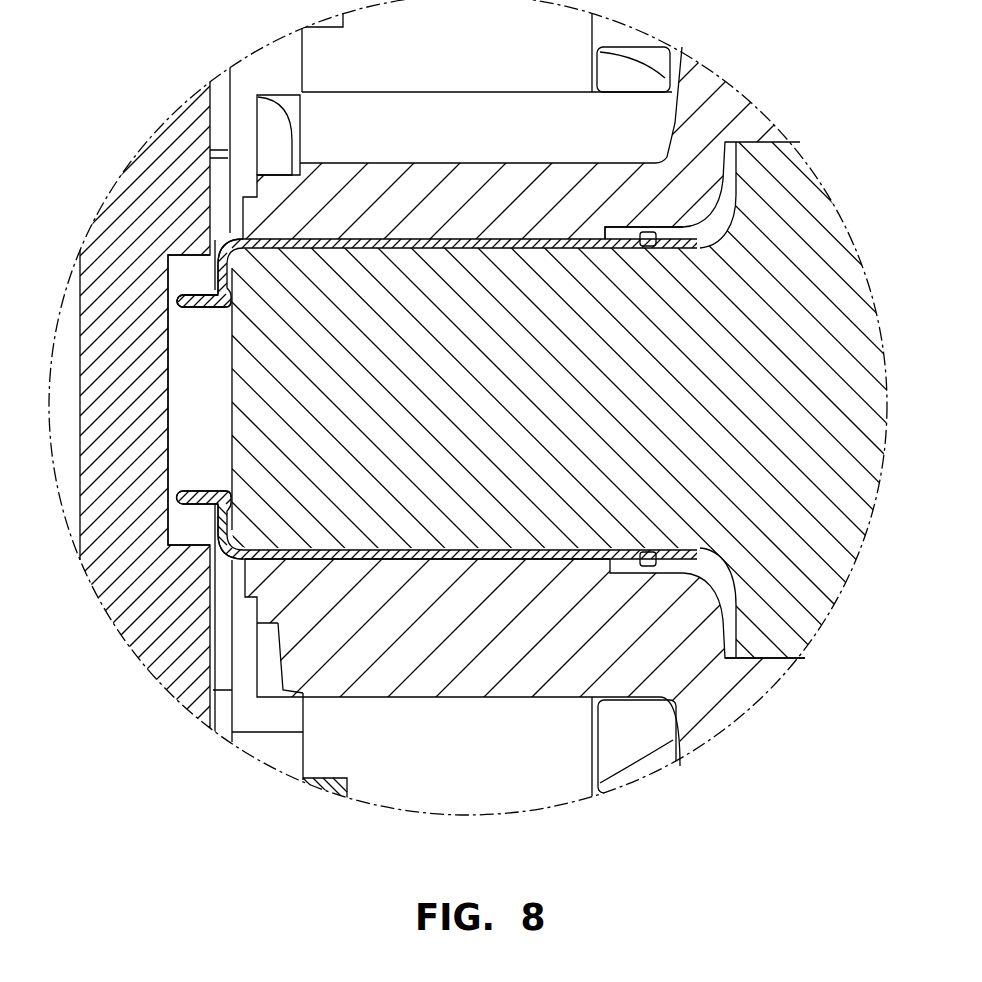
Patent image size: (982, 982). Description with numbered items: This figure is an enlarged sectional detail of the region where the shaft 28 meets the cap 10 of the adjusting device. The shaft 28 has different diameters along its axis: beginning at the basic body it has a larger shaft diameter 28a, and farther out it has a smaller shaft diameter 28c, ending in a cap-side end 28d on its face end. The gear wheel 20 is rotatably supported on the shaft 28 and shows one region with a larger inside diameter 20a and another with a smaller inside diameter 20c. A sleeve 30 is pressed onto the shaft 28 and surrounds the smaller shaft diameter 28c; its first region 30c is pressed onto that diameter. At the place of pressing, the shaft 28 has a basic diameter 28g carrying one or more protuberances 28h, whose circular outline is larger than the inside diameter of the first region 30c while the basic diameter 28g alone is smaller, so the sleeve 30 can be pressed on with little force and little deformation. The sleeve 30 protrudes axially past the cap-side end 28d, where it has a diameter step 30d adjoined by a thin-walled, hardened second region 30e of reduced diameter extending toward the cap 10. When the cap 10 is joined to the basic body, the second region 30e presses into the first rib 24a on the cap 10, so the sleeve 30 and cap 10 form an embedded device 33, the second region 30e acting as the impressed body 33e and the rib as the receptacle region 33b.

The cap 10 is at (173, 137).
The embedded device 33 is at (186, 278).
The impressed body 33e is at (185, 304).
The receptacle region 33b is at (178, 322).
The sleeve 30 is at (473, 239).
The first region 30c is at (565, 249).
The second region 30e is at (213, 527).
The diameter step 30d is at (195, 503).
The shaft 28 is at (810, 210).
The larger shaft diameter 28a is at (807, 622).
The smaller shaft diameter 28c is at (298, 250).
The cap-side end 28d is at (240, 425).
The basic diameter 28g is at (462, 546).
The protuberance 28h is at (390, 250).
The first rib 24a is at (183, 455).
The gear wheel 20 is at (720, 713).
The larger inside diameter 20a is at (770, 660).
The smaller inside diameter 20c is at (397, 563).